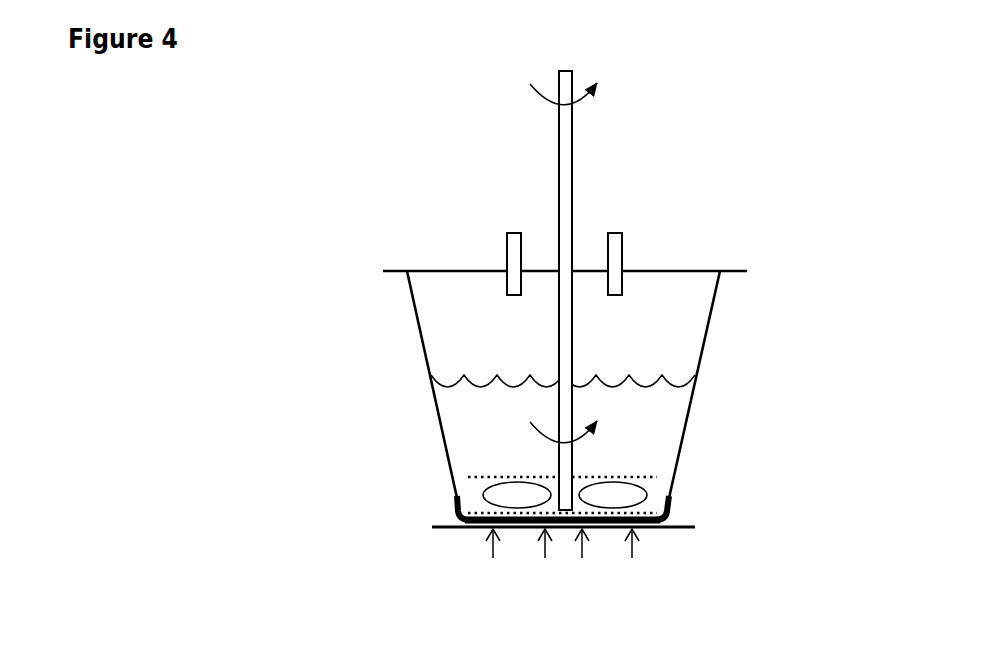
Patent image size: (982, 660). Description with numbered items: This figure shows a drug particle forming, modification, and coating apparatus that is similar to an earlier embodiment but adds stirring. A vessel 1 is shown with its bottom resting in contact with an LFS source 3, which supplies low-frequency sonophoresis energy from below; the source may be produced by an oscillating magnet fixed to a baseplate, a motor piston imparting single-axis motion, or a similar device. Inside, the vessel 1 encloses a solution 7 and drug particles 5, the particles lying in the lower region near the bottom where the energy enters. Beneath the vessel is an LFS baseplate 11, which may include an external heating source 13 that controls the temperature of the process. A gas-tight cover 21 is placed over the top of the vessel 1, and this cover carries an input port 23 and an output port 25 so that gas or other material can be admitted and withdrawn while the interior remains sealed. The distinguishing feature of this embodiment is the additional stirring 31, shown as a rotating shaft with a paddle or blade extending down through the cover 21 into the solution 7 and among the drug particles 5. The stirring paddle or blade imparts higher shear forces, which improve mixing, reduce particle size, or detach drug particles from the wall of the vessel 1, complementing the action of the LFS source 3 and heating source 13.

The vessel 1 is at (701, 372).
The LFS source 3 is at (562, 564).
The drug particles 5 is at (467, 472).
The solution 7 is at (466, 395).
The LFS baseplate 11 is at (683, 513).
The external heating source 13 is at (454, 508).
The gas-tight cover 21 is at (458, 267).
The input port 23 is at (514, 222).
The output port 25 is at (615, 223).
The stirring 31 is at (556, 458).